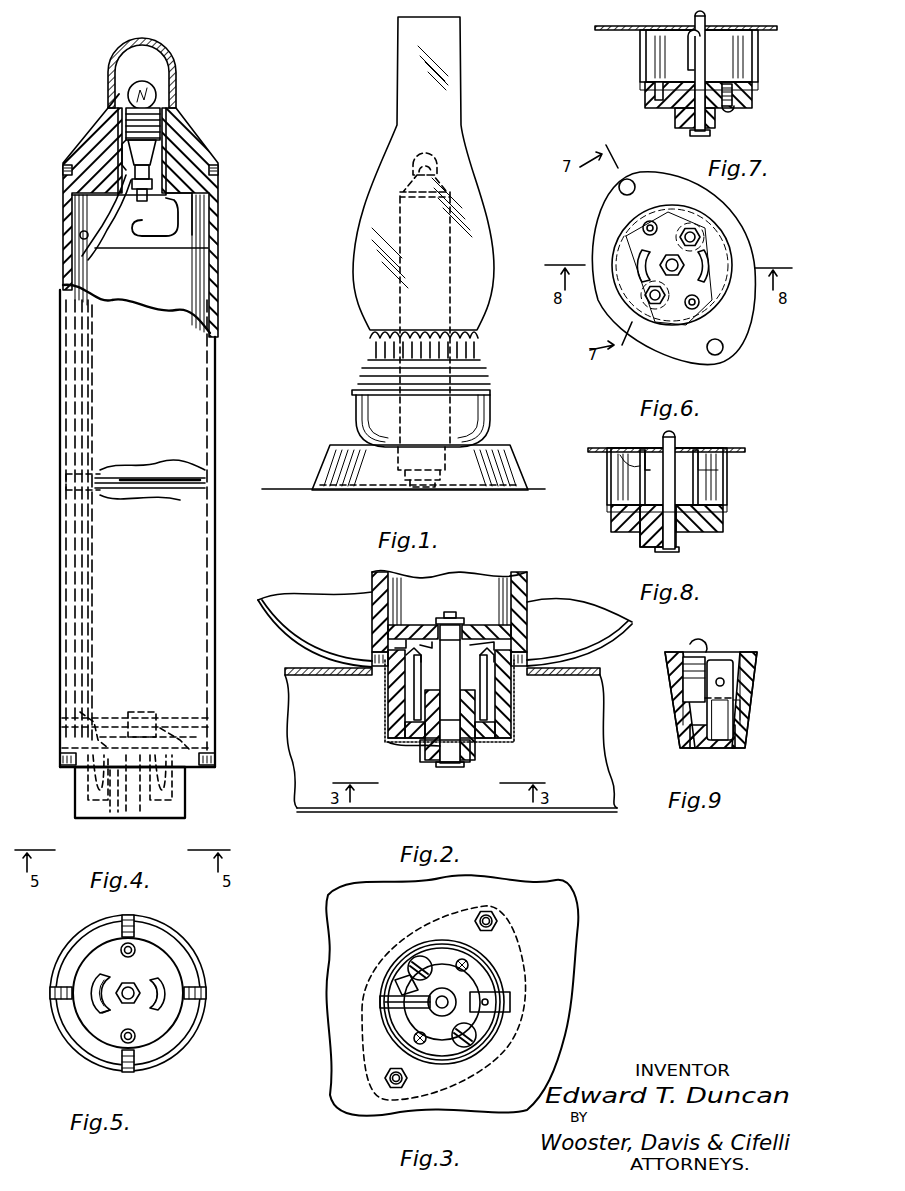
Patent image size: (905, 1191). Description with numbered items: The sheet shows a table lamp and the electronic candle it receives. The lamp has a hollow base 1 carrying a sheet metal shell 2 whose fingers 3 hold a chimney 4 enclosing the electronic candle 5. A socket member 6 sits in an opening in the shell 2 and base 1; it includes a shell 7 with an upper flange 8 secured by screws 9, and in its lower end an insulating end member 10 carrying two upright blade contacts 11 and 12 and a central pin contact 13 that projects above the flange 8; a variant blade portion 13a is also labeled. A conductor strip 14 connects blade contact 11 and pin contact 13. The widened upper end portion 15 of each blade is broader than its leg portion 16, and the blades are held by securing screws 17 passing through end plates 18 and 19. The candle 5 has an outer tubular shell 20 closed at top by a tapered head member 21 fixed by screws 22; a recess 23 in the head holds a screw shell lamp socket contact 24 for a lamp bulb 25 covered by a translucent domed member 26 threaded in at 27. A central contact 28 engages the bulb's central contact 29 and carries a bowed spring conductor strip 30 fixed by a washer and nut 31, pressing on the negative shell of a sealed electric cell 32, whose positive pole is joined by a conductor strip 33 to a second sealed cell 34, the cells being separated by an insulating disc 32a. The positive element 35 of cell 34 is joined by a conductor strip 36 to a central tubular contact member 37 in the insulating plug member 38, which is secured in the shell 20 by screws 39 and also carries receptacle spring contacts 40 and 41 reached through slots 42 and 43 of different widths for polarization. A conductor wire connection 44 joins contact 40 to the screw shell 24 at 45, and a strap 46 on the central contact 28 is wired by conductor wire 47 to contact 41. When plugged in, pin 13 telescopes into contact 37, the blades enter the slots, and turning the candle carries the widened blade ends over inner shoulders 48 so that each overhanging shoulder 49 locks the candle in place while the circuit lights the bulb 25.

In FIG. 1, the hollow base 1 is at (515, 460).
In FIG. 2, the hollow base 1 is at (594, 712).
In FIG. 3, the hollow base 1 is at (560, 930).
In FIG. 1, the sheet metal shell 2 is at (488, 422).
In FIG. 2, the sheet metal shell 2 is at (630, 628).
In FIG. 1, the fingers 3 is at (478, 335).
In FIG. 1, the chimney 4 is at (490, 248).
In FIG. 4, the electronic candle 5 is at (220, 263).
In FIG. 1, the electronic candle 5 is at (450, 275).
In FIG. 1, the socket member 6 is at (395, 466).
In FIG. 2, the socket member 6 is at (372, 726).
In FIG. 3, the socket member 6 is at (506, 975).
In FIG. 7, the socket member 6 is at (625, 88).
In FIG. 6, the socket member 6 is at (745, 245).
In FIG. 8, the socket member 6 is at (602, 492).
In FIG. 2, the shell 7 is at (512, 706).
In FIG. 7, the shell 7 is at (758, 58).
In FIG. 8, the shell 7 is at (727, 487).
In FIG. 3, the upper flange 8 is at (515, 945).
In FIG. 7, the upper flange 8 is at (620, 31).
In FIG. 6, the upper flange 8 is at (735, 322).
In FIG. 8, the upper flange 8 is at (745, 450).
In FIG. 3, the screws 9 is at (388, 1098).
In FIG. 2, the end member 10 is at (506, 735).
In FIG. 7, the end member 10 is at (752, 100).
In FIG. 6, the end member 10 is at (708, 243).
In FIG. 8, the end member 10 is at (723, 522).
In FIG. 9, the end member 10 is at (680, 738).
In FIG. 2, the blade contact 11 is at (414, 700).
In FIG. 7, the blade contact 11 is at (710, 52).
In FIG. 6, the blade contact 11 is at (642, 268).
In FIG. 8, the blade contact 11 is at (642, 455).
In FIG. 9, the blade contact 11 is at (710, 690).
In FIG. 2, the blade contact 12 is at (487, 690).
In FIG. 6, the blade contact 12 is at (704, 270).
In FIG. 8, the blade contact 12 is at (700, 462).
In FIG. 2, the central pin contact 13 is at (462, 745).
In FIG. 3, the central pin contact 13 is at (450, 992).
In FIG. 7, the central pin contact 13 is at (694, 60).
In FIG. 6, the central pin contact 13 is at (664, 258).
In FIG. 8, the central pin contact 13 is at (672, 455).
In FIG. 8, the contact blade 13a is at (693, 460).
In FIG. 2, the conductor strip 14 is at (425, 762).
In FIG. 3, the conductor strip 14 is at (380, 1002).
In FIG. 8, the conductor strip 14 is at (640, 540).
In FIG. 8, the upper end portion 15 is at (648, 462).
In FIG. 9, the upper end portion 15 is at (722, 672).
In FIG. 9, the leg portions 16 is at (728, 718).
In FIG. 3, the securing screws 17 is at (472, 1078).
In FIG. 7, the securing screws 17 is at (738, 112).
In FIG. 3, the end plate 18 is at (398, 986).
In FIG. 3, the end plate 19 is at (488, 1012).
In FIG. 4, the outer tubular shell 20 is at (214, 330).
In FIG. 5, the outer tubular shell 20 is at (168, 930).
In FIG. 2, the outer tubular shell 20 is at (527, 622).
In FIG. 4, the head member 21 is at (212, 160).
In FIG. 4, the screws 22 is at (216, 182).
In FIG. 4, the recess 23 is at (158, 150).
In FIG. 4, the screw shell lamp socket contact 24 is at (120, 125).
In FIG. 4, the electric lamp bulb 25 is at (142, 82).
In FIG. 4, the domed member 26 is at (160, 42).
In FIG. 4, the threads 27 is at (112, 100).
In FIG. 4, the central contact 28 is at (190, 205).
In FIG. 4, the central contact of lamp bulb 29 is at (148, 155).
In FIG. 4, the spring conductor strip 30 is at (168, 232).
In FIG. 4, the washer and nut 31 is at (136, 200).
In FIG. 4, the sealed electric cell 32 is at (196, 250).
In FIG. 4, the insulating disc 32a is at (180, 480).
In FIG. 4, the conductor strip 33 is at (150, 470).
In FIG. 4, the second sealed cell 34 is at (206, 540).
In FIG. 2, the second sealed cell 34 is at (442, 588).
In FIG. 4, the positive element 35 is at (140, 718).
In FIG. 2, the positive element 35 is at (452, 612).
In FIG. 4, the conductor strip 36 is at (100, 720).
In FIG. 2, the conductor strip 36 is at (426, 640).
In FIG. 4, the central tubular contact member 37 is at (170, 728).
In FIG. 2, the central tubular contact member 37 is at (505, 722).
In FIG. 4, the insulating plug member 38 is at (185, 785).
In FIG. 5, the insulating plug member 38 is at (172, 963).
In FIG. 1, the insulating plug member 38 is at (440, 470).
In FIG. 2, the insulating plug member 38 is at (386, 714).
In FIG. 9, the insulating plug member 38 is at (670, 690).
In FIG. 4, the screws 39 is at (232, 758).
In FIG. 5, the screws 39 is at (206, 990).
In FIG. 4, the receptacle spring contact 40 is at (88, 788).
In FIG. 5, the receptacle spring contact 40 is at (100, 984).
In FIG. 2, the receptacle spring contact 40 is at (406, 660).
In FIG. 4, the receptacle spring contact 41 is at (168, 792).
In FIG. 5, the receptacle spring contact 41 is at (155, 1010).
In FIG. 2, the receptacle spring contact 41 is at (494, 662).
In FIG. 4, the slot 42 is at (95, 812).
In FIG. 5, the slot 42 is at (102, 1010).
In FIG. 4, the slot 43 is at (172, 812).
In FIG. 5, the slot 43 is at (156, 980).
In FIG. 4, the conductor wire connection 44 is at (90, 547).
In FIG. 2, the conductor wire connection 44 is at (400, 640).
In FIG. 4, the connection 45 is at (122, 152).
In FIG. 4, the contact member strap 46 is at (100, 242).
In FIG. 4, the conductor wire 47 is at (72, 330).
In FIG. 2, the conductor wire 47 is at (484, 642).
In FIG. 9, the inner shoulder 48 is at (733, 690).
In FIG. 9, the overhanging shoulder 49 is at (740, 708).